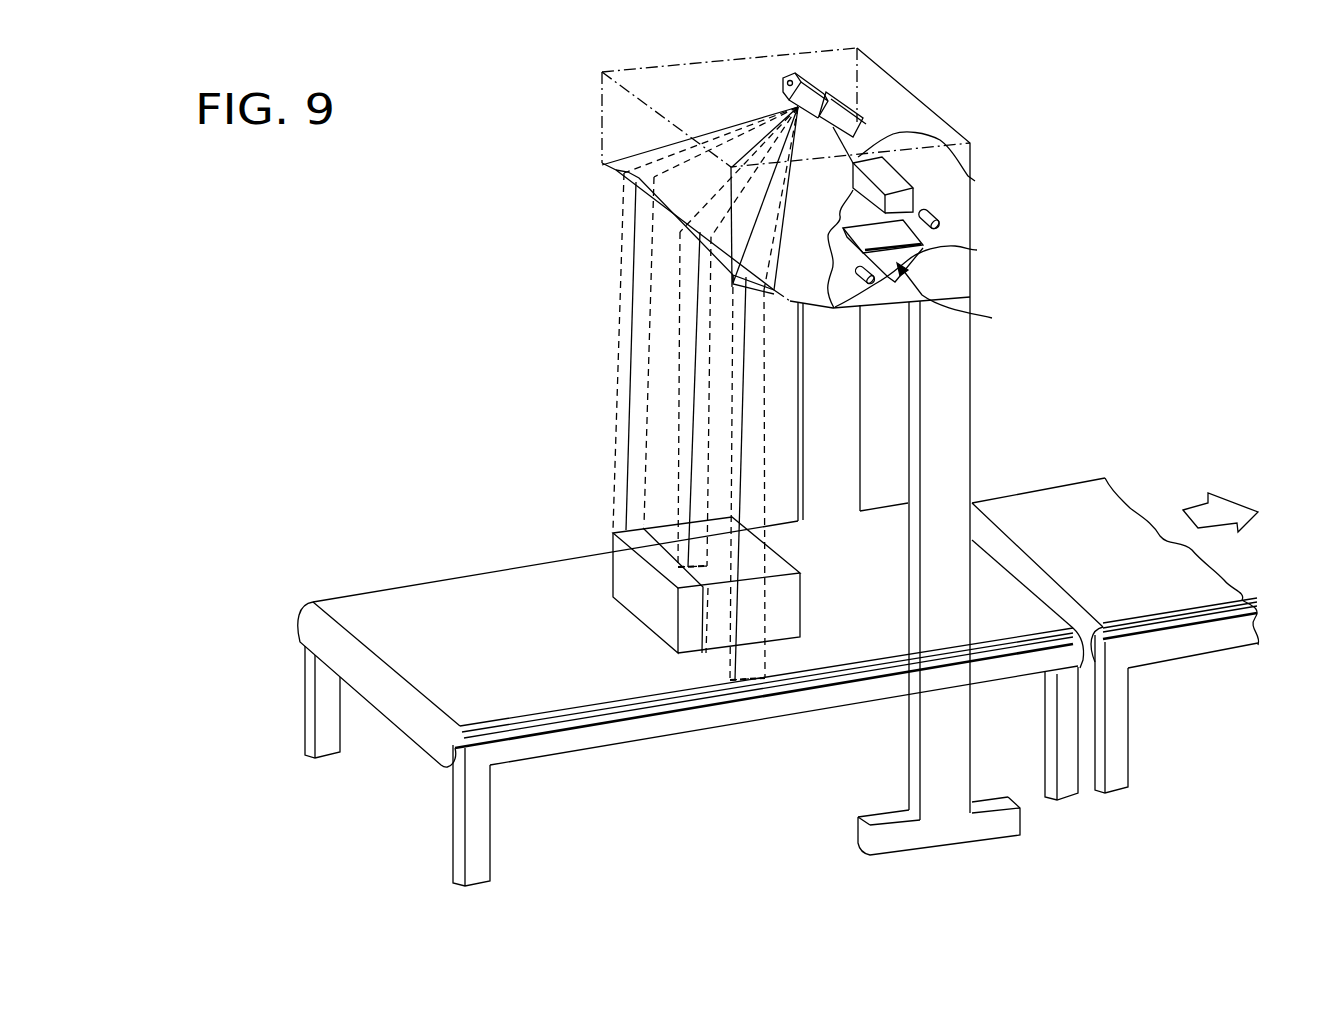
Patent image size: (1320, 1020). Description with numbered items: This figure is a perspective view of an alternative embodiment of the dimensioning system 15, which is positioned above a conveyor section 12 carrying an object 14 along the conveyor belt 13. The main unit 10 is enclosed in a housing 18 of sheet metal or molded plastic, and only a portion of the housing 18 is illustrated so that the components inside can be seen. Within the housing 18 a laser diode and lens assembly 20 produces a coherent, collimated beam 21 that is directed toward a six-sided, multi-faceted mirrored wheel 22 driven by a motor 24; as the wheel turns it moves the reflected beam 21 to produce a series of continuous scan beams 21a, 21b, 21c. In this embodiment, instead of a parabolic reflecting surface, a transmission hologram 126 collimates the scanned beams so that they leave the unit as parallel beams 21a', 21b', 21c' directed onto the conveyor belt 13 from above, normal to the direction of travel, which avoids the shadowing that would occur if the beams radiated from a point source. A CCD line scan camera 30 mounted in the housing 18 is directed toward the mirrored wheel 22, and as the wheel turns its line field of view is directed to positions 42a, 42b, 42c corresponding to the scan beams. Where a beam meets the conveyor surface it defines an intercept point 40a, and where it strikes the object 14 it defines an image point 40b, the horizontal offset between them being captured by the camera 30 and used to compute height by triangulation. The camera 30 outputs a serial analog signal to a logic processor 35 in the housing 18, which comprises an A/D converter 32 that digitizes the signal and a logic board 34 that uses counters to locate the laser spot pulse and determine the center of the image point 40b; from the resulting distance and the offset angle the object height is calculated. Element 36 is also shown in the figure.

The main unit 10 is at (860, 385).
The conveyor section 12 is at (517, 753).
The conveyor belt 13 is at (610, 686).
The object 14 is at (792, 615).
The dimensioning system 15 is at (944, 62).
The housing 18 is at (958, 272).
The laser diode and lens assembly 20 is at (944, 224).
The beam 21 is at (970, 178).
The scan beam 21a is at (801, 198).
The scan beam 21b is at (738, 189).
The scan beam 21c is at (700, 139).
The parallel beam 21a' is at (792, 478).
The parallel beam 21b' is at (629, 399).
The parallel beam 21c' is at (598, 356).
The mirrored wheel 22 is at (806, 88).
The motor 24 is at (858, 108).
The CCD line scan camera 30 is at (888, 180).
The A/D converter 32 is at (925, 246).
The logic board 34 is at (840, 233).
The logic processor 35 is at (960, 299).
The lens element 36 is at (872, 290).
The intercept point 40a is at (738, 685).
The image point 40b is at (673, 585).
The line field of view position 42a is at (732, 460).
The line field of view position 42b is at (680, 422).
The line field of view position 42c is at (652, 327).
The transmission hologram 126 is at (622, 172).